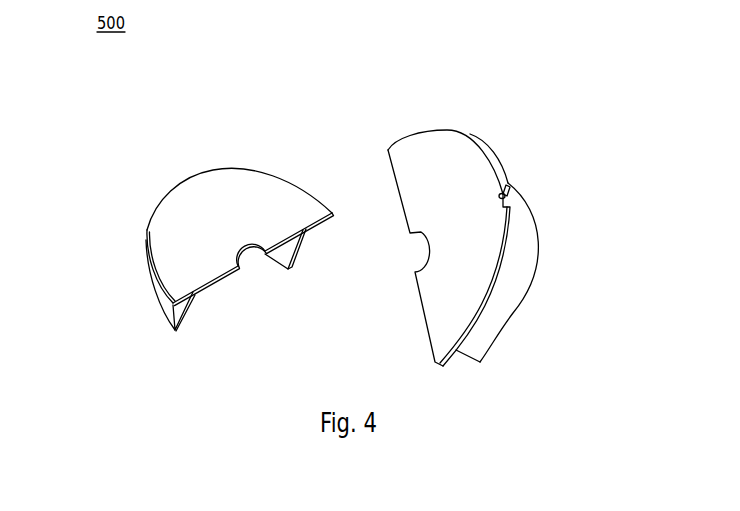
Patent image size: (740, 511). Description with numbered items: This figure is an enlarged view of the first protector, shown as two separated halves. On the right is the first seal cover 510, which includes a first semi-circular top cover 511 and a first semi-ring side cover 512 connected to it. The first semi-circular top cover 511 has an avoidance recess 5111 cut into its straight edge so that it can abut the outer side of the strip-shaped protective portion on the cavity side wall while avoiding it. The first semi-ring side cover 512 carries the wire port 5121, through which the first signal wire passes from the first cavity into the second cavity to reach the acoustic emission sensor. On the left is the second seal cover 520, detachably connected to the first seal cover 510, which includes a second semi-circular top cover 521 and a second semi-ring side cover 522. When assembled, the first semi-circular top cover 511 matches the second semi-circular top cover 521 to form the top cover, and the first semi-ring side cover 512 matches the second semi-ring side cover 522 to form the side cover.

The first seal cover 510 is at (392, 150).
The first semi-circular top cover 511 is at (487, 263).
The avoidance recess 5111 is at (500, 190).
The first semi-ring side cover 512 is at (500, 318).
The wire port 5121 is at (536, 229).
The second seal cover 520 is at (227, 171).
The second semi-circular top cover 521 is at (213, 270).
The second semi-ring side cover 522 is at (158, 289).